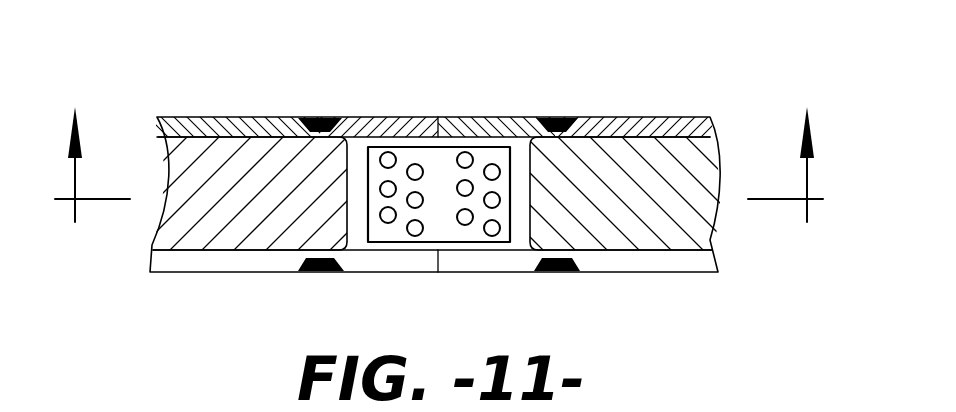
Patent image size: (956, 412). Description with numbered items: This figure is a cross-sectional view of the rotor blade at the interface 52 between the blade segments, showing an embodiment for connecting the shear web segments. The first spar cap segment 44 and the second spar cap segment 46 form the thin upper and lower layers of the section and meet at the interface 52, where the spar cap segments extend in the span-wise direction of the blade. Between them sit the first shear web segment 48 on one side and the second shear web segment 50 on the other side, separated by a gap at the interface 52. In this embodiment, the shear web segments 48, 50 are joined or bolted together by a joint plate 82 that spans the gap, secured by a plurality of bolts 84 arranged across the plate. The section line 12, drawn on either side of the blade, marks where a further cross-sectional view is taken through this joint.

The section line 12 is at (438, 154).
The first spar cap segment 44 is at (226, 121).
The second spar cap segment 46 is at (594, 122).
The first shear web segment 48 is at (214, 235).
The second shear web segment 50 is at (657, 153).
The interface 52 is at (483, 87).
The joint plate 82 is at (436, 160).
The bolts 84 is at (390, 218).